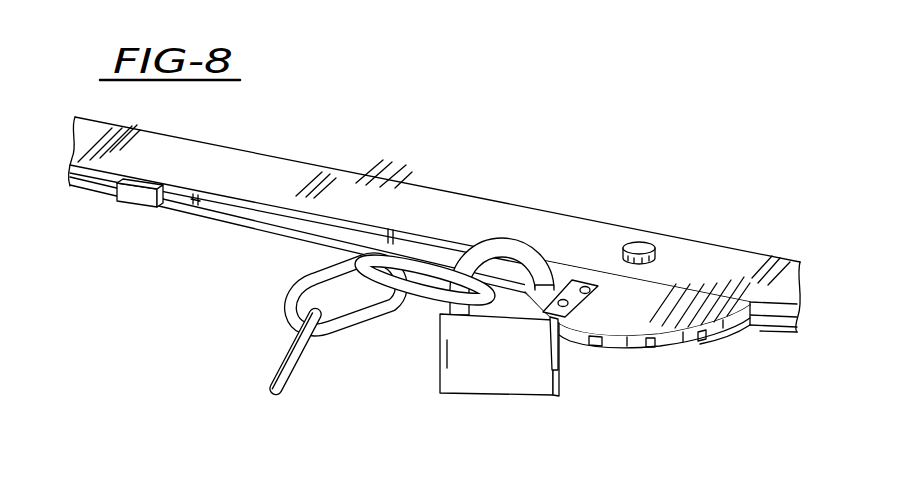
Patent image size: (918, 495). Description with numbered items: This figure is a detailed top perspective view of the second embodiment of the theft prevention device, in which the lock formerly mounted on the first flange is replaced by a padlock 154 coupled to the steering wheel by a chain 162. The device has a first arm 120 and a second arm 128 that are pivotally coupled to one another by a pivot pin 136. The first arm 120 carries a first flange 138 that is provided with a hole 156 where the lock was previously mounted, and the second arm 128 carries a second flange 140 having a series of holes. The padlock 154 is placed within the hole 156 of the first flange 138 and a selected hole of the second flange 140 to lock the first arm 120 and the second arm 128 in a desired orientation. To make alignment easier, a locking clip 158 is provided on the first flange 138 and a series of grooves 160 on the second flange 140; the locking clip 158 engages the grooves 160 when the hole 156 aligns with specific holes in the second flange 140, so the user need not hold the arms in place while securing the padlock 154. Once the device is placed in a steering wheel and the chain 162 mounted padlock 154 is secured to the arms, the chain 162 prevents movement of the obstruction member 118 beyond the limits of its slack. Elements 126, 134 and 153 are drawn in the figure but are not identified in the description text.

The obstruction member 118 is at (300, 142).
The first arm 120 is at (253, 210).
The plate 126 is at (366, 193).
The second arm 128 is at (187, 205).
The opening 134 is at (287, 233).
The pivot pin 136 is at (644, 243).
The first flange 138 is at (700, 300).
The second flange 140 is at (723, 332).
The clip 153 is at (137, 198).
The padlock 154 is at (440, 378).
The hole 156 is at (548, 308).
The locking clip 158 is at (547, 330).
The grooves 160 is at (650, 348).
The chain 162 is at (282, 358).